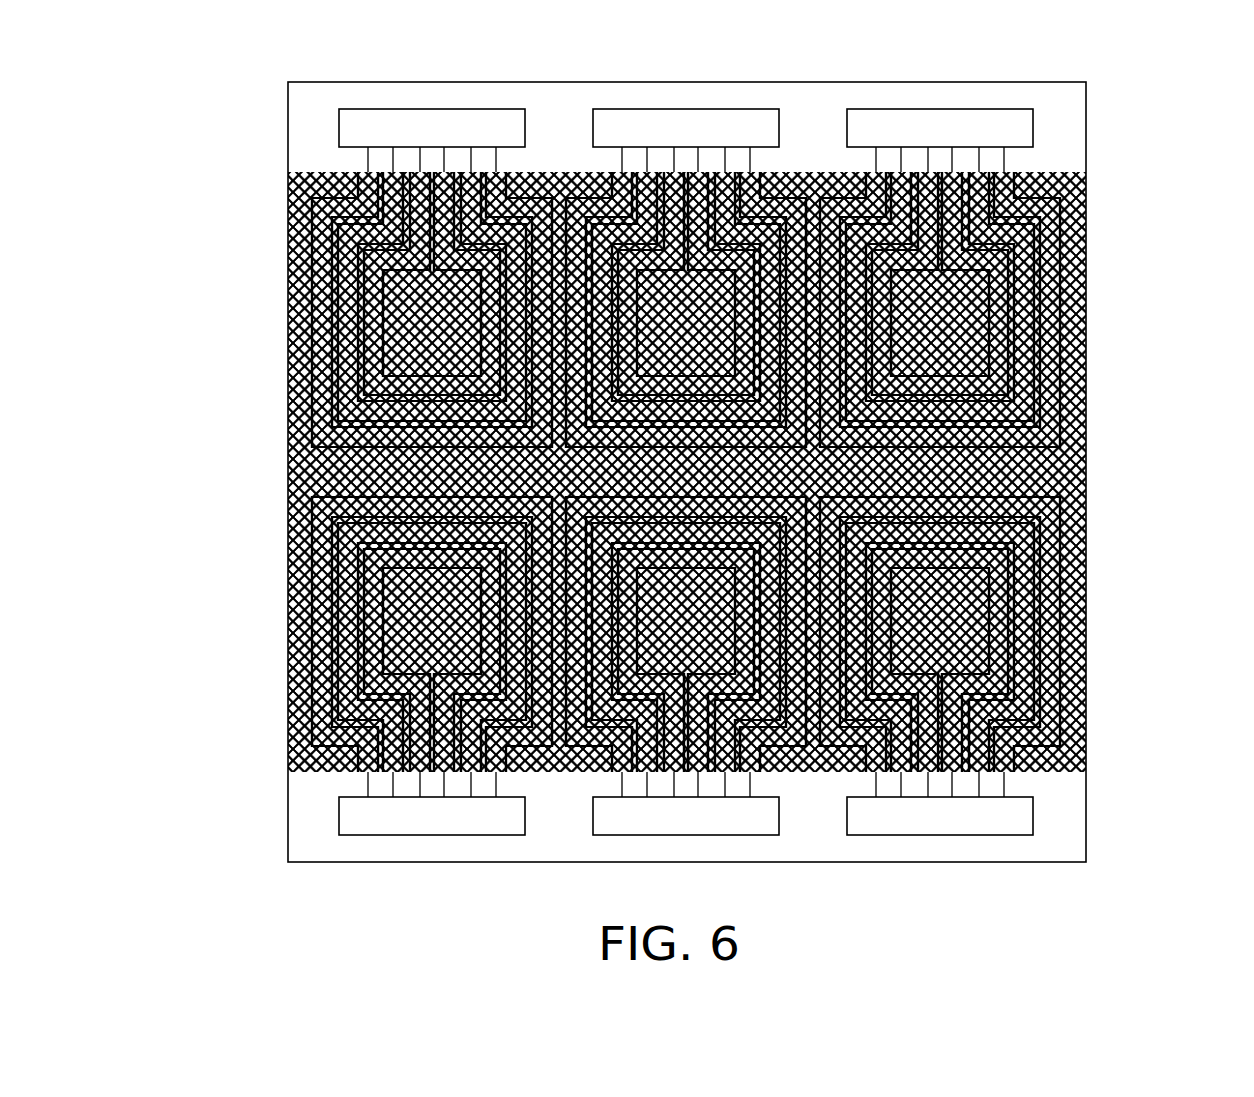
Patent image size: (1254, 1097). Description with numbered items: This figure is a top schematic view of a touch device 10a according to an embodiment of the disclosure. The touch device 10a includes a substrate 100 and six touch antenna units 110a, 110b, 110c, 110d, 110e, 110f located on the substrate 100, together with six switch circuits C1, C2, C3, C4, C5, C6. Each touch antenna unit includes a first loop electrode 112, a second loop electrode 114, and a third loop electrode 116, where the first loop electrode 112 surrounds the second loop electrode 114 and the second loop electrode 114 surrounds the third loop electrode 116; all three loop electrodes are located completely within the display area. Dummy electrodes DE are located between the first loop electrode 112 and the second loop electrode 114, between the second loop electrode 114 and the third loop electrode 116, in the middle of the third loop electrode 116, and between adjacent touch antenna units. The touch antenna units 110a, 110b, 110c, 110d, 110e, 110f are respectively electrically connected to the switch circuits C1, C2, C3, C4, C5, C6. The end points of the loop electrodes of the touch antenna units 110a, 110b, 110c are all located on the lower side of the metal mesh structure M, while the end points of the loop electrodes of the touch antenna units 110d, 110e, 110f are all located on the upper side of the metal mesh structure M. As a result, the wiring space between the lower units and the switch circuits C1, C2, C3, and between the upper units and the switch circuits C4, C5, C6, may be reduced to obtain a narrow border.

The touch device 10a is at (1141, 154).
The substrate 100 is at (1087, 818).
The metal mesh structure M is at (297, 198).
The dummy electrode DE is at (1084, 739).
The touch antenna unit 110a is at (216, 588).
The touch antenna unit 110b is at (216, 438).
The touch antenna unit 110c is at (1150, 588).
The touch antenna unit 110d is at (216, 238).
The touch antenna unit 110e is at (1150, 400).
The touch antenna unit 110f is at (1150, 238).
The first loop electrode 112 is at (316, 242).
The second loop electrode 114 is at (346, 296).
The third loop electrode 116 is at (366, 330).
The switch circuit C1 is at (437, 836).
The switch circuit C2 is at (689, 836).
The switch circuit C3 is at (943, 836).
The switch circuit C4 is at (437, 108).
The switch circuit C5 is at (689, 108).
The switch circuit C6 is at (943, 108).